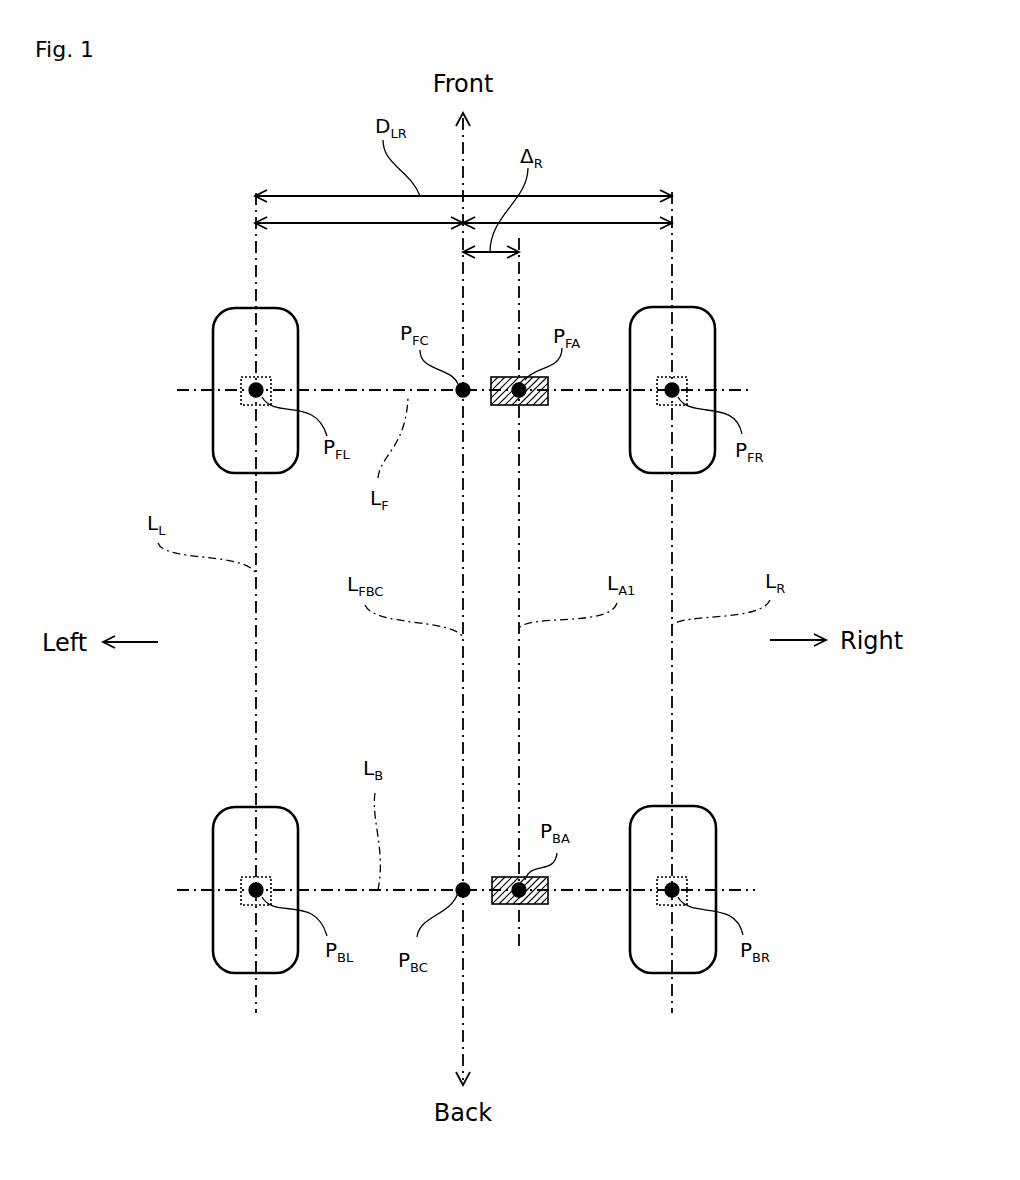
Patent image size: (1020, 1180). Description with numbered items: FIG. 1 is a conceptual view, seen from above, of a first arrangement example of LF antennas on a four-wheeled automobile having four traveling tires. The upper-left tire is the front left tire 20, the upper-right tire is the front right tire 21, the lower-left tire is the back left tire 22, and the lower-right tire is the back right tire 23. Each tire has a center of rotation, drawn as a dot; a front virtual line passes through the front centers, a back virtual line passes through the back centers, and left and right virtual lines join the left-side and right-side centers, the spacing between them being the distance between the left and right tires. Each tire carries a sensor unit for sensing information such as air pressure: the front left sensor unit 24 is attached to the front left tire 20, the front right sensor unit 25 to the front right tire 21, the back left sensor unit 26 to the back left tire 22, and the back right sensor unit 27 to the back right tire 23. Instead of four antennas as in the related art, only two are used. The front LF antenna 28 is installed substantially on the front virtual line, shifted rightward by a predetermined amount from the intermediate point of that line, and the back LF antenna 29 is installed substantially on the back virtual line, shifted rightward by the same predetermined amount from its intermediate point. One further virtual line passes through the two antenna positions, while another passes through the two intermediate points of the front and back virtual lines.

The front left tire 20 is at (222, 311).
The front right tire 21 is at (715, 320).
The back left tire 22 is at (222, 811).
The back right tire 23 is at (716, 812).
The front left sensor unit 24 is at (241, 380).
The front right sensor unit 25 is at (687, 380).
The back left sensor unit 26 is at (241, 878).
The back right sensor unit 27 is at (687, 878).
The front LF antenna 28 is at (530, 406).
The back LF antenna 29 is at (530, 905).